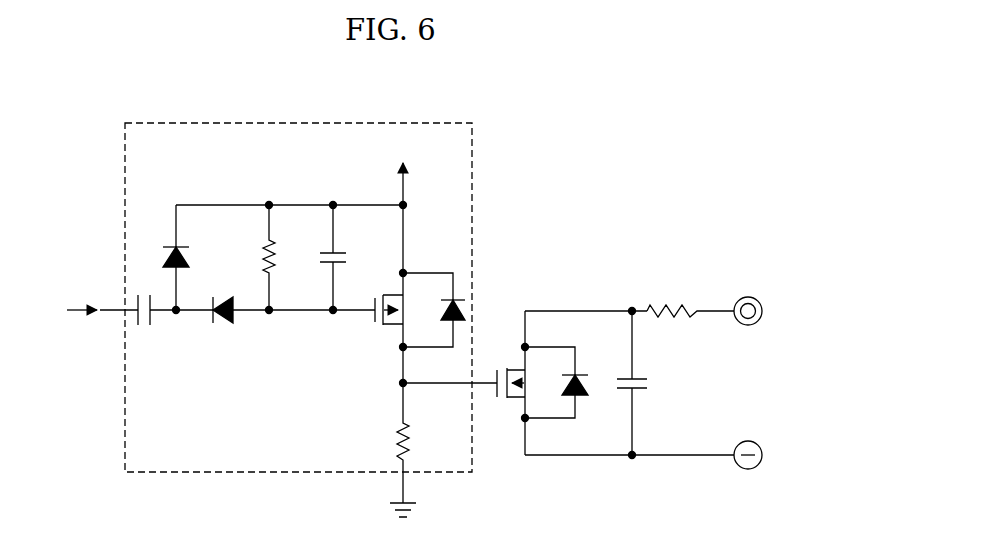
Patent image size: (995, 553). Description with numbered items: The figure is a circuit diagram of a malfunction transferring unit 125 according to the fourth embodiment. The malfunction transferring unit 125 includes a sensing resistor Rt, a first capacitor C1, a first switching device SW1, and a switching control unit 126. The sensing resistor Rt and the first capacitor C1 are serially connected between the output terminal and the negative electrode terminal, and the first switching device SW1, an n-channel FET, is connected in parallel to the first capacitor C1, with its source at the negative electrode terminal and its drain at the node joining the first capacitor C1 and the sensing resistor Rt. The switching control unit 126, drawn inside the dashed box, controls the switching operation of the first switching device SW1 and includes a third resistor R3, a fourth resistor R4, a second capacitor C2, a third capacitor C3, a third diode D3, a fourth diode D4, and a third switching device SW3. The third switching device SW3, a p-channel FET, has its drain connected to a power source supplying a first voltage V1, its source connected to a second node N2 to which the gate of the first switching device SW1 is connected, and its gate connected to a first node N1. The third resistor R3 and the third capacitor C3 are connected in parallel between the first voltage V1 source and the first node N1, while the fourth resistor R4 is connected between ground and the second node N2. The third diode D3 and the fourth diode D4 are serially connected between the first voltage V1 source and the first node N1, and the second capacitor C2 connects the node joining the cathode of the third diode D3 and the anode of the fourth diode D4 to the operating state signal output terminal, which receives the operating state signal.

The malfunction transferring unit 125 is at (603, 188).
The switching control unit 126 is at (297, 123).
The first capacitor C1 is at (648, 383).
The second capacitor C2 is at (170, 321).
The third capacitor C3 is at (348, 257).
The third diode D3 is at (293, 322).
The fourth diode D4 is at (190, 257).
The third resistor R3 is at (285, 257).
The fourth resistor R4 is at (419, 443).
The sensing resistor Rt is at (690, 298).
The first switching device SW1 is at (512, 422).
The third switching device SW3 is at (386, 342).
The first node N1 is at (335, 323).
The second node N2 is at (419, 372).
The first voltage V1 is at (405, 168).